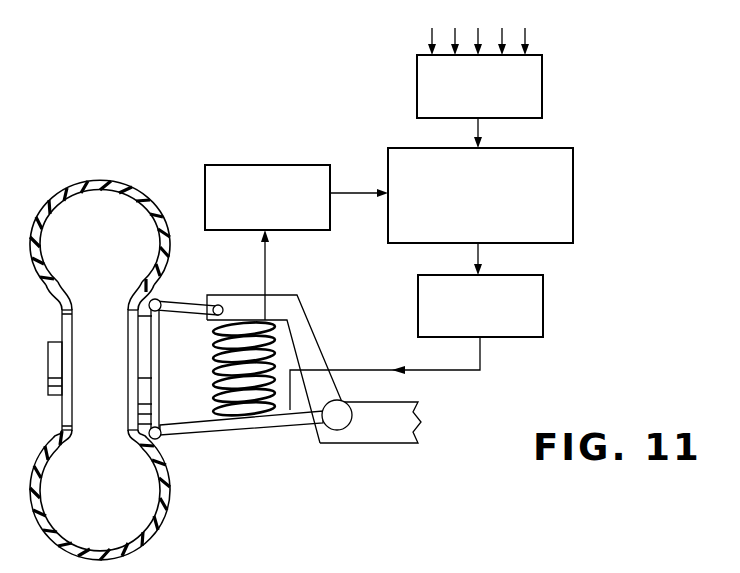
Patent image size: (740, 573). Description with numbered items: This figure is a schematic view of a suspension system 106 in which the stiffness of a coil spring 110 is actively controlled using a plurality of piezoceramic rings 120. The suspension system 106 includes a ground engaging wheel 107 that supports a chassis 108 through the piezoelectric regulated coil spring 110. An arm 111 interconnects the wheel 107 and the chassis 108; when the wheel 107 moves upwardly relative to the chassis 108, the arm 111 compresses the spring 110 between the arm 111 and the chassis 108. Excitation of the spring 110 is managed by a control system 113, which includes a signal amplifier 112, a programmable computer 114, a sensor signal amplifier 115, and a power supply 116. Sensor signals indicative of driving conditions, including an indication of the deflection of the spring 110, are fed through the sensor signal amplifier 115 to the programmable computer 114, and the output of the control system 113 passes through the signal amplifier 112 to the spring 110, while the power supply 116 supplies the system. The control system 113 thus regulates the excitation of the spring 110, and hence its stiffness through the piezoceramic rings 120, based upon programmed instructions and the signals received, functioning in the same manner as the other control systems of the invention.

The suspension system 106 is at (137, 146).
The ground engaging wheel 107 is at (92, 181).
The chassis 108 is at (370, 433).
The piezoelectric regulated coil spring 110 is at (244, 404).
The arm 111 is at (197, 436).
The signal amplifier 112 is at (213, 165).
The control system 113 is at (347, 132).
The programmable computer 114 is at (573, 193).
The sensor signal amplifier 115 is at (542, 92).
The power supply 116 is at (543, 306).
The piezoceramic rings 120 is at (335, 566).